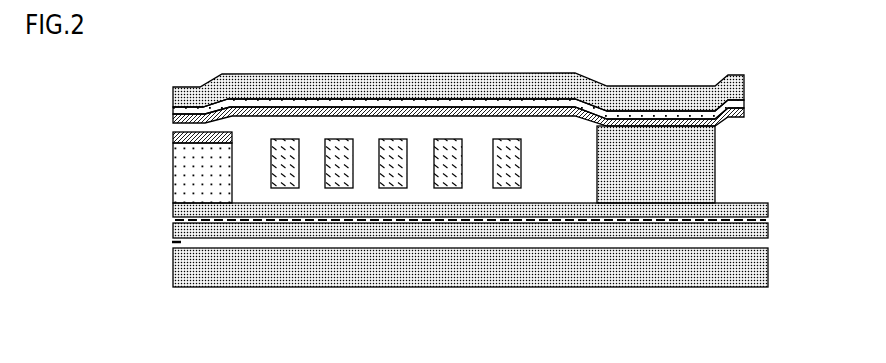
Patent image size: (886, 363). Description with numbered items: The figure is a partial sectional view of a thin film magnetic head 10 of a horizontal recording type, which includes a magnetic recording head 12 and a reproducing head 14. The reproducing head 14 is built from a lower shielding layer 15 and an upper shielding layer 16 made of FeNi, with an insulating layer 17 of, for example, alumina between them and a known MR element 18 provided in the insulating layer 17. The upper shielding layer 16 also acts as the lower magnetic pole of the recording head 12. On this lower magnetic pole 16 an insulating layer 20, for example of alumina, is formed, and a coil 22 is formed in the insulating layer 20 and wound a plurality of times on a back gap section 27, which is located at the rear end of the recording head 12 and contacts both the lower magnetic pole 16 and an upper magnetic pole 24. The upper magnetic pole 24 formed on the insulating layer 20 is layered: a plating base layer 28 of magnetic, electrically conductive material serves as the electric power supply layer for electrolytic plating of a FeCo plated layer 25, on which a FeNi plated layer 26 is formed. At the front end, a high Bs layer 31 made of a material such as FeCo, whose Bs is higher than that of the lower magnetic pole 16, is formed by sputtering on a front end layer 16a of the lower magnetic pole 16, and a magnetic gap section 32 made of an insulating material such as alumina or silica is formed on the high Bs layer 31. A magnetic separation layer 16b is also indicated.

The thin film magnetic head 10 is at (456, 66).
The magnetic recording head 12 is at (782, 77).
The reproducing head 14 is at (798, 205).
The lower shielding layer 15 is at (325, 275).
The upper shielding layer 16 is at (373, 224).
The front end layer 16a is at (178, 177).
The magnetic separation layer 16b is at (512, 227).
The insulating layer 17 is at (435, 245).
The MR element 18 is at (163, 240).
The insulating layer 20 is at (250, 130).
The coil 22 is at (510, 150).
The upper magnetic pole 24 is at (355, 8).
The FeCo plated layer 25 is at (286, 102).
The FeNi plated layer 26 is at (287, 79).
The back gap section 27 is at (625, 140).
The plating base layer 28 is at (292, 112).
The high Bs layer 31 is at (173, 138).
The magnetic gap section 32 is at (173, 129).